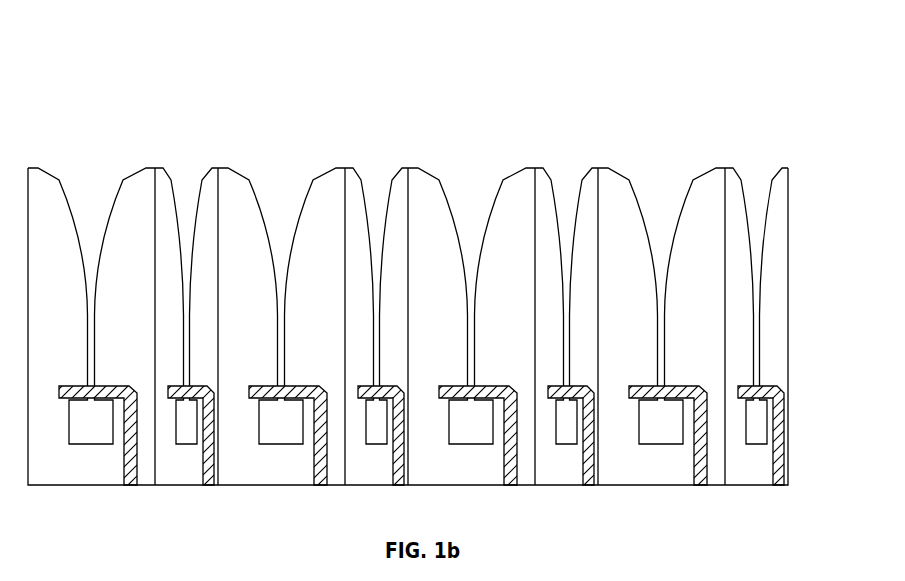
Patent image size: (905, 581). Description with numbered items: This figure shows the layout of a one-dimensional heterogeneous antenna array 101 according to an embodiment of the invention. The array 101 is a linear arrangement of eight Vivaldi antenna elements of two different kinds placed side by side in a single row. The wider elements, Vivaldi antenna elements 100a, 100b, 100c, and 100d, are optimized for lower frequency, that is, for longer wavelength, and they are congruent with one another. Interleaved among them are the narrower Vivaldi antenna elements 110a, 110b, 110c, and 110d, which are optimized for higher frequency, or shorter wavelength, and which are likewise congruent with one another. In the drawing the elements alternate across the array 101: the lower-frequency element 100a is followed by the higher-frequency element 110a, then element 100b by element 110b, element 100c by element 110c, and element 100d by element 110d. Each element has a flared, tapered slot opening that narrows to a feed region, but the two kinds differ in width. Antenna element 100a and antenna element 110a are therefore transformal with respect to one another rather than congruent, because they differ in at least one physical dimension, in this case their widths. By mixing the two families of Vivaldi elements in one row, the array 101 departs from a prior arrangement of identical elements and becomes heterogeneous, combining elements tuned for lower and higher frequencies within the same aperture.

The antenna array 101 is at (122, 73).
The Vivaldi antenna element 100a is at (119, 296).
The Vivaldi antenna element 110a is at (193, 296).
The Vivaldi antenna element 100b is at (290, 296).
The Vivaldi antenna element 110b is at (383, 296).
The Vivaldi antenna element 100c is at (480, 296).
The Vivaldi antenna element 110c is at (573, 296).
The Vivaldi antenna element 100d is at (670, 296).
The Vivaldi antenna element 110d is at (763, 296).